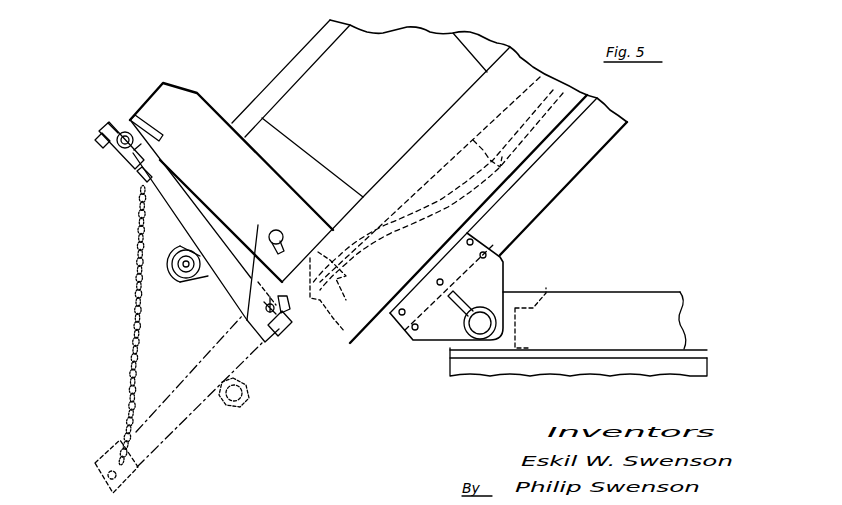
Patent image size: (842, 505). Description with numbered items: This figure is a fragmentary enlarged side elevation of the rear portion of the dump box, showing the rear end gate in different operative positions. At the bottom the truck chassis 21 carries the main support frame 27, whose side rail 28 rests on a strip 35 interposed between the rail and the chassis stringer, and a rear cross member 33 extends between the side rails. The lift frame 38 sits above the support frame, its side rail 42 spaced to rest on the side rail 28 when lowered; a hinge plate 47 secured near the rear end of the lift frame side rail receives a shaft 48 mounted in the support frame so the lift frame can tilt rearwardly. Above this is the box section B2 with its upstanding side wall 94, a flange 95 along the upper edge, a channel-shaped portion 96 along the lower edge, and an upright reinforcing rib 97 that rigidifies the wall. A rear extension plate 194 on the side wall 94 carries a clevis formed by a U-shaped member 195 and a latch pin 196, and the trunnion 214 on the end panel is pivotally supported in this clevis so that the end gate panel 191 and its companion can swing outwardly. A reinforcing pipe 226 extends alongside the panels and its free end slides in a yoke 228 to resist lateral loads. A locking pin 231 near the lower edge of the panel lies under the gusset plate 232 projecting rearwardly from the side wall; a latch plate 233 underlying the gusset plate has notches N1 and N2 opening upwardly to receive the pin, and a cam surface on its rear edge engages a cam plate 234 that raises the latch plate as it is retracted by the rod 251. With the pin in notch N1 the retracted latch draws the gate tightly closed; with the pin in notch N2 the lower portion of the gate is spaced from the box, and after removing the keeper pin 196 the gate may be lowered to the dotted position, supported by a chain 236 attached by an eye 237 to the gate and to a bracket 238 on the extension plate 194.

The box section B2 is at (368, 30).
The chassis 21 is at (464, 379).
The main support frame 27 is at (625, 290).
The side rails 28 is at (690, 305).
The rear cross member 33 is at (548, 297).
The strips 35 is at (692, 357).
The lift frame 38 is at (597, 157).
The side rail 42 is at (606, 130).
The hinge plates 47 is at (497, 280).
The shaft 48 is at (487, 322).
The side wall 94 is at (318, 78).
The flange 95 is at (240, 115).
The channel-shaped portion 96 is at (440, 137).
The upright reinforcing ribs 97 is at (473, 48).
The end gate panel 191 is at (208, 233).
The rear extension plate 194 is at (187, 103).
The U-shaped member 195 is at (122, 130).
The latch pin 196 is at (105, 126).
The trunnion 214 is at (106, 163).
The pipe 226 is at (200, 290).
The yoke 228 is at (178, 279).
The locking pins 231 is at (283, 337).
The gusset plate 232 is at (259, 265).
The latch plate 233 is at (268, 345).
The cam plate 234 is at (339, 280).
The chain 236 is at (131, 393).
The eye 237 is at (140, 185).
The bracket 238 is at (147, 113).
The rod 251 is at (387, 205).
The notch N1 is at (276, 277).
The notch N2 is at (287, 318).